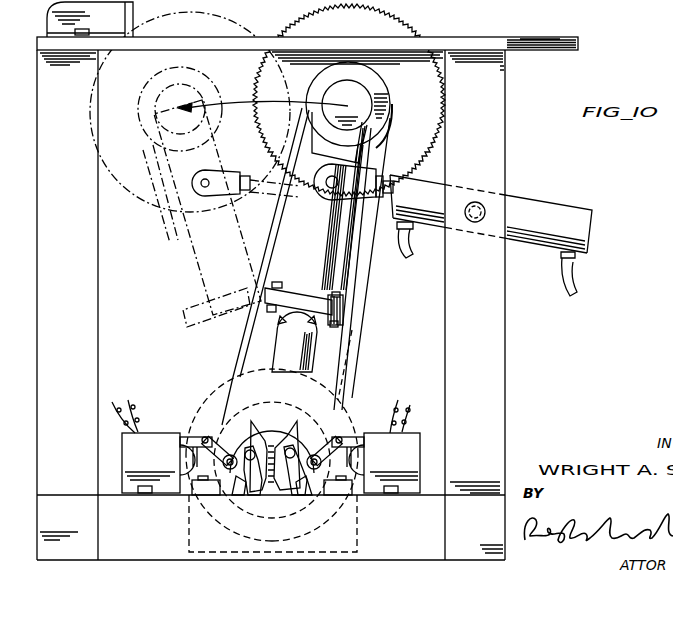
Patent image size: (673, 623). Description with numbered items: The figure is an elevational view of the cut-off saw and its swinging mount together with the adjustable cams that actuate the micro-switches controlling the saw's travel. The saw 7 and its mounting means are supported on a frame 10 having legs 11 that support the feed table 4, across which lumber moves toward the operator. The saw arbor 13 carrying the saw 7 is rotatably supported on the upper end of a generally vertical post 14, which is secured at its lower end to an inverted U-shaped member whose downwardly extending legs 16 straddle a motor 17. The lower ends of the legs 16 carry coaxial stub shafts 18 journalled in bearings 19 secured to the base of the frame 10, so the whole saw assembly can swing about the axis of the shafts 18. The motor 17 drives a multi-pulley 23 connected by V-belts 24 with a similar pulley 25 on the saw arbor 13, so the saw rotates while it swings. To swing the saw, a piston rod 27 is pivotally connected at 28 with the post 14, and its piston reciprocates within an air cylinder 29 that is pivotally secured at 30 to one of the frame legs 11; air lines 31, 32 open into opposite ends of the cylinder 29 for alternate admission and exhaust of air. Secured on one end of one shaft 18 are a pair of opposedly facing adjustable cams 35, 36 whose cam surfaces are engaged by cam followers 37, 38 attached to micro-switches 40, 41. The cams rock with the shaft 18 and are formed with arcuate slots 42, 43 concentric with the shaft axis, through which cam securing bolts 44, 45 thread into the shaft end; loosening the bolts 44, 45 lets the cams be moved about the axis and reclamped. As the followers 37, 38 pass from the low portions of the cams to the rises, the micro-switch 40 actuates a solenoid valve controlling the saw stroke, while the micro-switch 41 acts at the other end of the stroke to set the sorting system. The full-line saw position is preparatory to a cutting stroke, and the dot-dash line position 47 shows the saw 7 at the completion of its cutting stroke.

The feed table 4 is at (263, 37).
The saw 7 is at (395, 32).
The frame 10 is at (307, 298).
The legs 11 is at (505, 170).
The saw arbor 13 is at (342, 92).
The post 14 is at (330, 278).
The legs 16 is at (300, 342).
The motor 17 is at (230, 377).
The stub shafts 18 is at (277, 427).
The bearings 19 is at (227, 423).
The multi-pulley 23 is at (343, 393).
The V-belts 24 is at (282, 208).
The pulley 25 is at (380, 83).
The piston rod 27 is at (386, 182).
The pivotal connection 28 is at (328, 200).
The air cylinder 29 is at (545, 210).
The pivot 30 is at (474, 224).
The air line 31 is at (411, 241).
The air line 32 is at (578, 287).
The adjustable cam 35 is at (233, 497).
The adjustable cam 36 is at (316, 497).
The cam follower 37 is at (228, 458).
The cam follower 38 is at (318, 455).
The micro-switch 40 is at (146, 446).
The micro-switch 41 is at (392, 446).
The arcuate slot 42 is at (252, 467).
The arcuate slot 43 is at (300, 470).
The cam securing bolt 44 is at (240, 480).
The cam securing bolt 45 is at (300, 480).
The dot-dash line position 47 is at (121, 200).